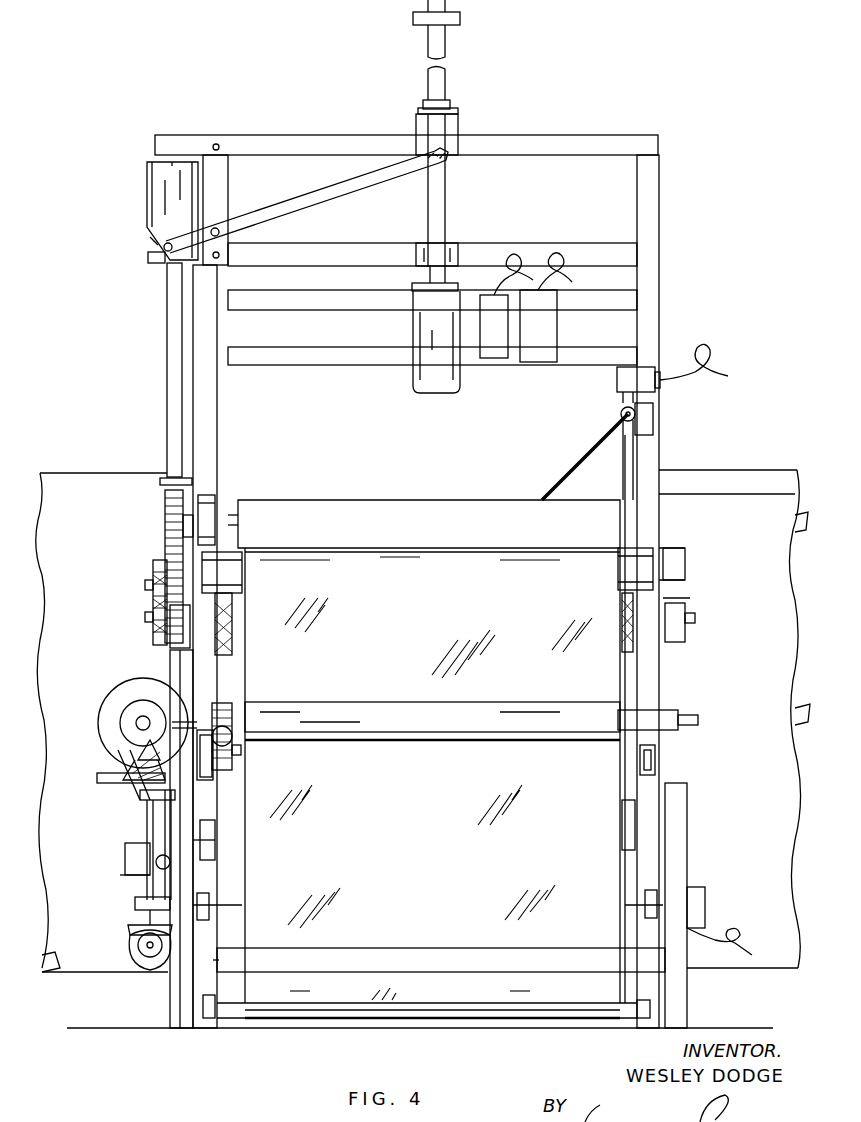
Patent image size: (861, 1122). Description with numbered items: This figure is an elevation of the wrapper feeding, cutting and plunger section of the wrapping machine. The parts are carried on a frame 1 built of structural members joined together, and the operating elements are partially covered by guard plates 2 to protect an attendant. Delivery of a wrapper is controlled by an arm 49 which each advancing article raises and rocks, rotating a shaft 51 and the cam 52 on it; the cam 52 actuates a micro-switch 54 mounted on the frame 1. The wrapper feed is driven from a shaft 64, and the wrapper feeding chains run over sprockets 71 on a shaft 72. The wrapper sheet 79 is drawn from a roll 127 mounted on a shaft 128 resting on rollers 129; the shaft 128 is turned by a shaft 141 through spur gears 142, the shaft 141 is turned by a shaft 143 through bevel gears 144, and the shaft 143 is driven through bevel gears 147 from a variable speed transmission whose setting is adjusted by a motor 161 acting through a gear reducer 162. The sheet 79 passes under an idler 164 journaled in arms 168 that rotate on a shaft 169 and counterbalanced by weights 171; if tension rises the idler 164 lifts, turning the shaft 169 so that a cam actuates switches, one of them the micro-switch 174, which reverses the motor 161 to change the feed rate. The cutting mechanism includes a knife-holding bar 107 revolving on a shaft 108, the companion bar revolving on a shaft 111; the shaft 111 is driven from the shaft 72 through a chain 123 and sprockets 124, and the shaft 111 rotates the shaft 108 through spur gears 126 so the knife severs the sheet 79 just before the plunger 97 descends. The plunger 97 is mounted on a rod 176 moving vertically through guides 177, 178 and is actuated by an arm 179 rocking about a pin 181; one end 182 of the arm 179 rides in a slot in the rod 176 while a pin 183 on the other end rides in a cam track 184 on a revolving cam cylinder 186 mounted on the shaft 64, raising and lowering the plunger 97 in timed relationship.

The frame 1 is at (655, 291).
The guard plates 2 is at (94, 645).
The arm 49 is at (590, 452).
The shaft 51 is at (640, 414).
The cam 52 is at (622, 410).
The micro-switch 54 is at (652, 384).
The shaft 64 is at (170, 376).
The sprockets 71 is at (235, 642).
The shaft 72 is at (695, 618).
The wrapper sheet 79 is at (434, 802).
The plunger 97 is at (420, 388).
The knife-holding bar 107 is at (380, 504).
The shaft 108 is at (218, 518).
The shaft 111 is at (150, 573).
The chain 123 is at (152, 598).
The sprockets 124 is at (152, 580).
The spur gears 126 is at (165, 560).
The roll 127 is at (535, 705).
The shaft 128 is at (698, 720).
The rollers 129 is at (222, 773).
The shaft 141 is at (241, 750).
The spur gears 142 is at (230, 706).
The shaft 143 is at (148, 888).
The bevel gears 144 is at (135, 768).
The bevel gears 147 is at (128, 932).
The motor 161 is at (103, 707).
The gear reducer 162 is at (124, 858).
The idler 164 is at (225, 1018).
The arms 168 is at (208, 992).
The shaft 169 is at (225, 903).
The weights 171 is at (222, 849).
The micro-switch 174 is at (705, 893).
The rod 176 is at (438, 50).
The guide 177 is at (447, 105).
The guide 178 is at (450, 245).
The arm 179 is at (300, 200).
The pin 181 is at (218, 228).
The end 182 is at (440, 162).
The pin 183 is at (162, 258).
The cam track 184 is at (152, 238).
The cam cylinder 186 is at (155, 190).